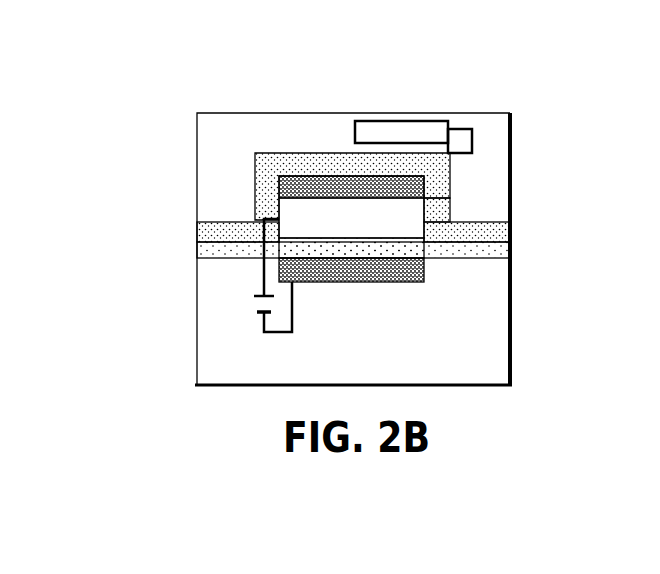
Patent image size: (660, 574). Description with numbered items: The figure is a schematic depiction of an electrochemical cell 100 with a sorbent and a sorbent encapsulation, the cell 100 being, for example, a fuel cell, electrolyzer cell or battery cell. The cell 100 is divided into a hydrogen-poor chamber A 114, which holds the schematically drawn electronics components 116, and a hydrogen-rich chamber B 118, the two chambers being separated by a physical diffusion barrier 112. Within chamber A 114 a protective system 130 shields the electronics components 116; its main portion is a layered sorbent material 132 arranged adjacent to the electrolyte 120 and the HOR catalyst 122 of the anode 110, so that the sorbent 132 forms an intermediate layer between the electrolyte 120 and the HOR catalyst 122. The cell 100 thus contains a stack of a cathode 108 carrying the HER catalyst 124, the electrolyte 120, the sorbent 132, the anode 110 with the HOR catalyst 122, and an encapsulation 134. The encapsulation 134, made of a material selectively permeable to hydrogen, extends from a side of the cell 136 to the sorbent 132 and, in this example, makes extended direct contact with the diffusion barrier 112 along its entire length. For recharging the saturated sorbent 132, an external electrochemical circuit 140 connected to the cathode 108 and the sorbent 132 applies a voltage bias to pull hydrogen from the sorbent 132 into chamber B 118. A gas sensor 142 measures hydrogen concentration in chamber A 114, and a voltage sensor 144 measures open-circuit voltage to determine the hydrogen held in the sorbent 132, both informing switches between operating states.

The electrochemical cell 100 is at (353, 235).
The cathode 108 is at (444, 318).
The anode 110 is at (451, 178).
The physical diffusion barrier 112 is at (223, 250).
The chamber A 114 is at (489, 136).
The electronics components 116 is at (395, 129).
The chamber B 118 is at (480, 369).
The electrolyte 120 is at (427, 248).
The HOR catalyst 122 is at (450, 192).
The HER catalyst 124 is at (424, 268).
The protective system 130 is at (278, 207).
The sorbent material 132 is at (425, 224).
The encapsulation 134 is at (450, 168).
The side of the cell 136 is at (196, 233).
The external circuit 140 is at (236, 326).
The gas sensor 142 is at (459, 127).
The voltage sensor 144 is at (450, 208).